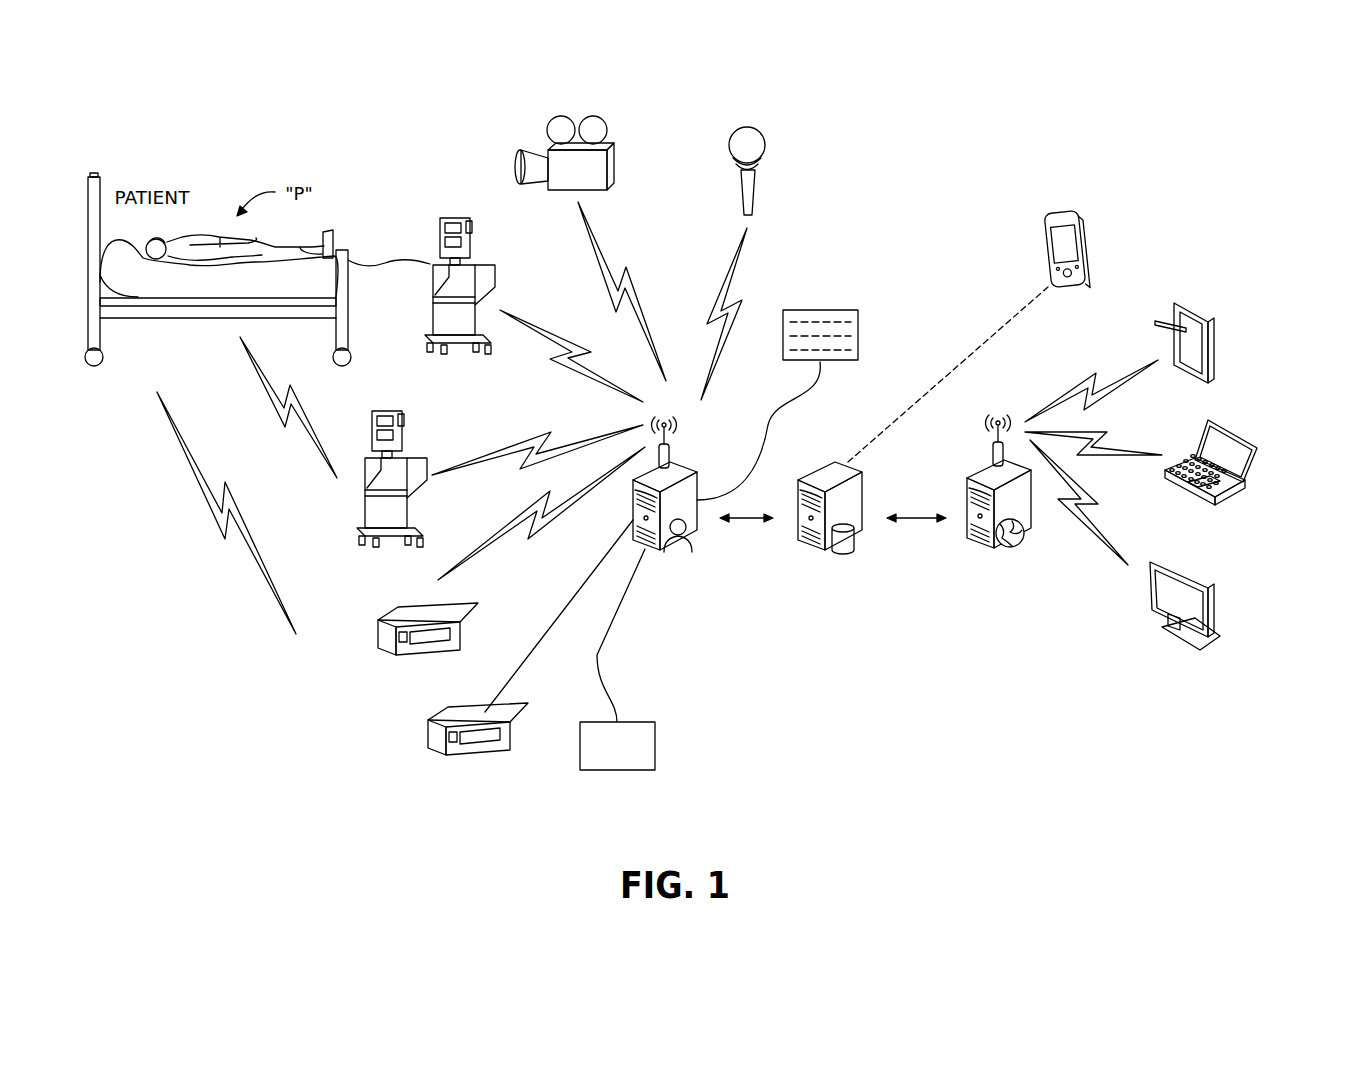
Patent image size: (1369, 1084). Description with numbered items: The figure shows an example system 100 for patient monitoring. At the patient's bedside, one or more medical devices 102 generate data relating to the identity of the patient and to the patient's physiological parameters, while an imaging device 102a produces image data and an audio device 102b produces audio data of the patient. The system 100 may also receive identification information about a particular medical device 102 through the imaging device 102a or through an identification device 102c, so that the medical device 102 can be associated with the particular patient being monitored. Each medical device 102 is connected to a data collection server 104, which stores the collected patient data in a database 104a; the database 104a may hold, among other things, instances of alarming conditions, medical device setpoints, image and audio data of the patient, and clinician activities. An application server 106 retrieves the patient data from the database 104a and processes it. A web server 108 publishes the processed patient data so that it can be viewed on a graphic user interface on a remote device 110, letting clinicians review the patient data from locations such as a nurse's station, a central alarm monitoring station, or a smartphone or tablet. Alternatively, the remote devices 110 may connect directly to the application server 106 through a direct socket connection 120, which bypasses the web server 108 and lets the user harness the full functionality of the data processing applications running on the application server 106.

The system for patient monitoring 100 is at (1176, 258).
The medical devices 102 is at (433, 318).
The imaging device 102a is at (515, 165).
The audio device 102b is at (757, 128).
The identification device 102c is at (636, 772).
The data collection server 104 is at (693, 468).
The database 104a is at (845, 310).
The application server 106 is at (832, 462).
The web server 108 is at (975, 470).
The remote devices 110 is at (1085, 243).
The direct socket connection 120 is at (998, 333).